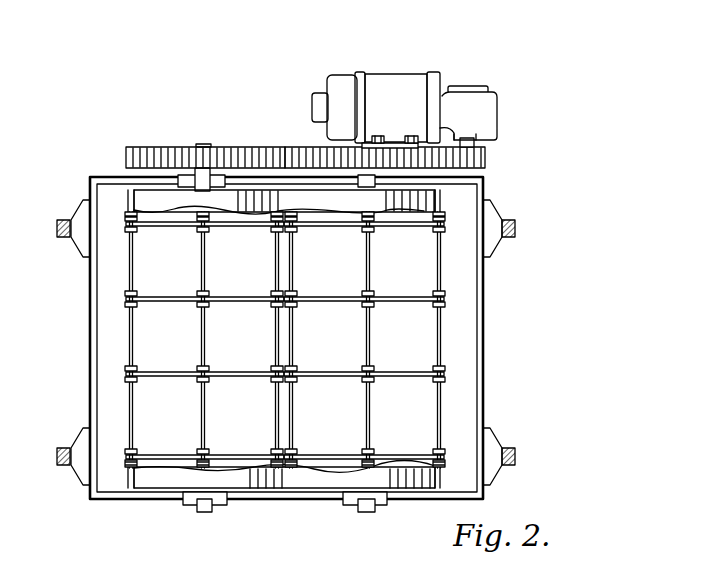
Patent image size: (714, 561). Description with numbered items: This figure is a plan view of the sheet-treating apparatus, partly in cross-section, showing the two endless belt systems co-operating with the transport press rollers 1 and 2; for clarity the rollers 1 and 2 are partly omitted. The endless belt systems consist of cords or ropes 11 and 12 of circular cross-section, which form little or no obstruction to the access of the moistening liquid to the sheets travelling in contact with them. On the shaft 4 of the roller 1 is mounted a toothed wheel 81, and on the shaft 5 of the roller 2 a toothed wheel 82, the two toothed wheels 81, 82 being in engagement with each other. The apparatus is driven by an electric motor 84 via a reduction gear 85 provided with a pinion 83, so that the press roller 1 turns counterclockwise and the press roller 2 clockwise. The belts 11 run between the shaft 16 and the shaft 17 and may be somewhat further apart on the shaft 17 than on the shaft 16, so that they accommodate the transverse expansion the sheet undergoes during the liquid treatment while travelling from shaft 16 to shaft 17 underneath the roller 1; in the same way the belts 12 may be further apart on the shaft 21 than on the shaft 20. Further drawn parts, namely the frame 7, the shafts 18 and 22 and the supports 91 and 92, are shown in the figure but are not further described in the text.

The transport press roller 1 is at (142, 205).
The transport press roller 2 is at (438, 207).
The shaft 4 is at (204, 144).
The shaft 5 is at (380, 136).
The frame 7 is at (480, 310).
The cords or ropes 11 is at (175, 229).
The cords or ropes 12 is at (345, 229).
The shaft 16 is at (133, 260).
The shaft 17 is at (276, 261).
The vertical rod 18 is at (204, 260).
The shaft 20 is at (437, 261).
The shaft 21 is at (293, 260).
The vertical rod 22 is at (370, 260).
The toothed wheel 81 is at (247, 154).
The toothed wheel 82 is at (308, 154).
The pinion 83 is at (486, 158).
The electric motor 84 is at (395, 88).
The reduction gear 85 is at (490, 115).
The right support bracket 91 is at (509, 220).
The left support bracket 92 is at (63, 220).